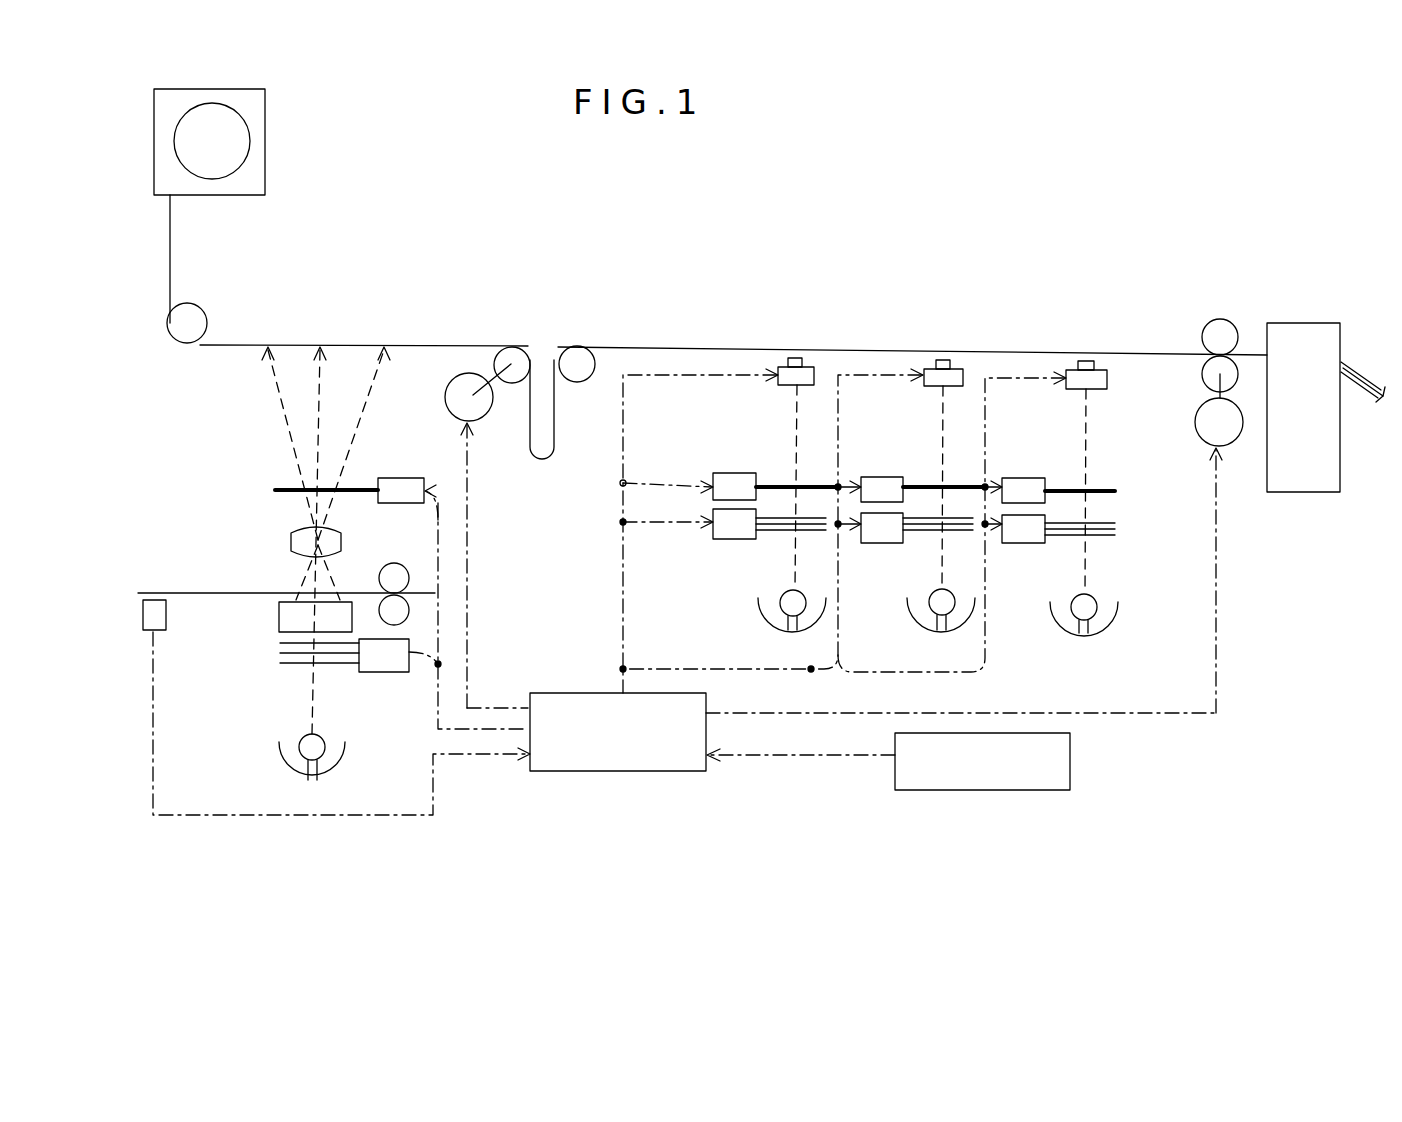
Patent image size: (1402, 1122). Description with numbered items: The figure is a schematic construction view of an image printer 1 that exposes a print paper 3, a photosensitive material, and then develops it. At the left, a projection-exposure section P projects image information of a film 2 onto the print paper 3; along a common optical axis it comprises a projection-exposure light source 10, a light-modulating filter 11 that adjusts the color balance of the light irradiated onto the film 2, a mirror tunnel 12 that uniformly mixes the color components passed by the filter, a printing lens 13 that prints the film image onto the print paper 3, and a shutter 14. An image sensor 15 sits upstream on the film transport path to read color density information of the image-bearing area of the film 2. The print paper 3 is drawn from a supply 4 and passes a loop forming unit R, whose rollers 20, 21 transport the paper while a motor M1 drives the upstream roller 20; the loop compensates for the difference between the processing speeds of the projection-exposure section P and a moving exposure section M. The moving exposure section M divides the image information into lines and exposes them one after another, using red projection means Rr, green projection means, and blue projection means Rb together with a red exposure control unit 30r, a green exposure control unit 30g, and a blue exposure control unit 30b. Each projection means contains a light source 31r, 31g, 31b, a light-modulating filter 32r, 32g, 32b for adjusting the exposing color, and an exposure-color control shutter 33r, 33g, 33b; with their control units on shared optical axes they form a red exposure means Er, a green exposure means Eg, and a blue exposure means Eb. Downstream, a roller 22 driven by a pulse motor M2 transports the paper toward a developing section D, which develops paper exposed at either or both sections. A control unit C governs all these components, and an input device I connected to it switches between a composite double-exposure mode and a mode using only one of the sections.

The image printer 1 is at (797, 228).
The film 2 is at (193, 593).
The print paper 3 is at (170, 272).
The photosensitive material magazine 4 is at (265, 150).
The projection-exposure light source 10 is at (299, 747).
The light-modulating filter 11 is at (383, 672).
The mirror tunnel 12 is at (278, 617).
The printing lens 13 is at (292, 537).
The shutter 14 is at (275, 490).
The image sensor 15 is at (146, 614).
The roller 20 is at (505, 350).
The roller 21 is at (577, 355).
The roller 22 is at (1220, 320).
The blue exposure control unit 30b is at (804, 364).
The green exposure control unit 30g is at (955, 368).
The red exposure control unit 30r is at (1100, 368).
The light source 31b is at (757, 608).
The light source 31g is at (975, 625).
The light source 31r is at (1112, 620).
The light-modulating filter 32b is at (713, 533).
The light-modulating filter 32g is at (885, 543).
The light-modulating filter 32r is at (1105, 540).
The shutter 33b is at (713, 490).
The shutter 33g is at (885, 477).
The shutter 33r is at (1115, 495).
The loop forming unit R is at (542, 338).
The blue projection means Rb is at (548, 490).
The red projection means Rr is at (1290, 568).
The blue exposure means Eb is at (790, 350).
The green exposure means Eg is at (936, 357).
The red exposure means Er is at (1075, 357).
The motor M1 is at (446, 396).
The pulse motor M2 is at (1237, 445).
The moving exposure section M is at (1127, 673).
The developing section D is at (1302, 323).
The control unit C is at (585, 771).
The input device I is at (1070, 765).
The projection-exposure section P is at (370, 783).